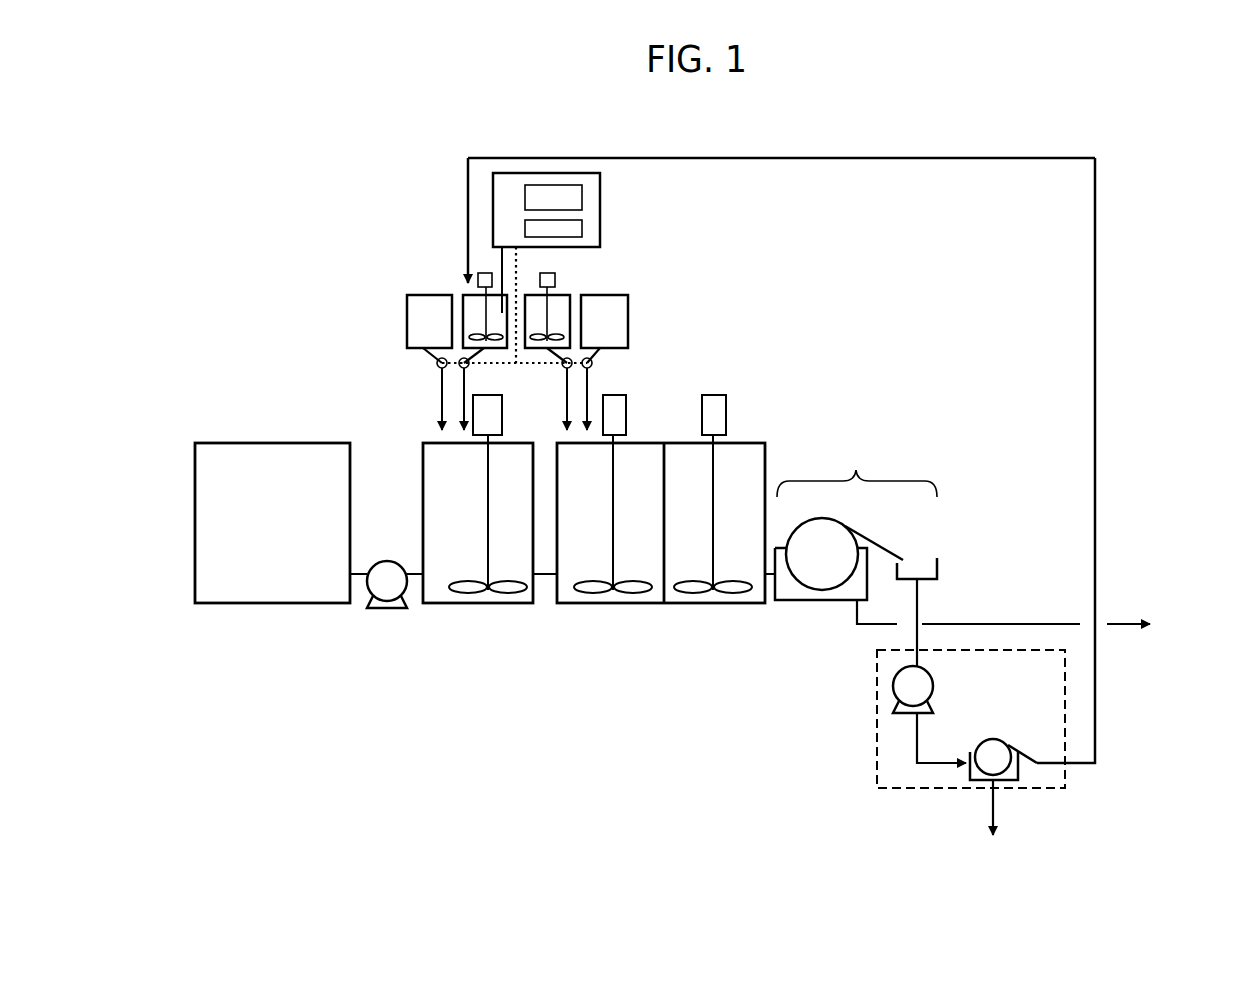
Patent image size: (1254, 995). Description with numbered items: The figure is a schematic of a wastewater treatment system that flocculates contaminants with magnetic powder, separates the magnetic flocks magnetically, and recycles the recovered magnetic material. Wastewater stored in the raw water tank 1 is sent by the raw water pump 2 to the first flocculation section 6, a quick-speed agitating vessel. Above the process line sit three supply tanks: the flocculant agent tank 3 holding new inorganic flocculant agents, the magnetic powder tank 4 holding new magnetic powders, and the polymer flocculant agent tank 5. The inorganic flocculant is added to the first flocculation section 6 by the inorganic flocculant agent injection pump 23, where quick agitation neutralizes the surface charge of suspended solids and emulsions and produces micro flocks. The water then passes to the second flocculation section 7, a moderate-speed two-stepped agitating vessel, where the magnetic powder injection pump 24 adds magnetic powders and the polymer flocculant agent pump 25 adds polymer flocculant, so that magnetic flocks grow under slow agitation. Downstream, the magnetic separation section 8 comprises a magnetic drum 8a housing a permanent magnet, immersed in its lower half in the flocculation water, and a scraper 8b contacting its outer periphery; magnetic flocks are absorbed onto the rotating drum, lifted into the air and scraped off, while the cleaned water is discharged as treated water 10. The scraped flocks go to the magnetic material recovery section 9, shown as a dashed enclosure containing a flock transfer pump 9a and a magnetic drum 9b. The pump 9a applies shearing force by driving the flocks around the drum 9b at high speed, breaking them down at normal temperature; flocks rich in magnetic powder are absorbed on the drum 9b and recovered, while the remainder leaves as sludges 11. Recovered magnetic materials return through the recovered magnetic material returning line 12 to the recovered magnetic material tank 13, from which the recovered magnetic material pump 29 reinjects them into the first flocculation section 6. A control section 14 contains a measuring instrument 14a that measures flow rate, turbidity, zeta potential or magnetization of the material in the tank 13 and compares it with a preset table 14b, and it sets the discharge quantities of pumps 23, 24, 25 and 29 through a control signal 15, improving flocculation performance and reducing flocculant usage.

The raw water tank 1 is at (212, 500).
The raw water pump 2 is at (396, 590).
The flocculant agent tank 3 is at (435, 307).
The magnetic powder tank 4 is at (558, 292).
The polymer flocculant agent tank 5 is at (612, 330).
The first flocculation section 6 is at (520, 565).
The second flocculation section 7 is at (660, 587).
The magnetic separation section 8 is at (862, 466).
The magnetic drum 8a is at (816, 570).
The scraper 8b is at (904, 558).
The magnetic material recovery section 9 is at (877, 757).
The flock transfer pump 9a is at (913, 685).
The magnetic drum 9b is at (990, 763).
The treated water 10 is at (1147, 625).
The sludges 11 is at (995, 823).
The recovered magnetic material returning line 12 is at (1095, 285).
The recovered magnetic material tank 13 is at (478, 318).
The control section 14 is at (555, 173).
The measuring instrument 14a is at (576, 199).
The table 14b is at (576, 229).
The control signal 15 is at (520, 372).
The inorganic flocculant agent injection pump 23 is at (438, 369).
The magnetic powder injection pump 24 is at (563, 368).
The polymer flocculant agent pump 25 is at (593, 368).
The recovered magnetic material pump 29 is at (469, 368).